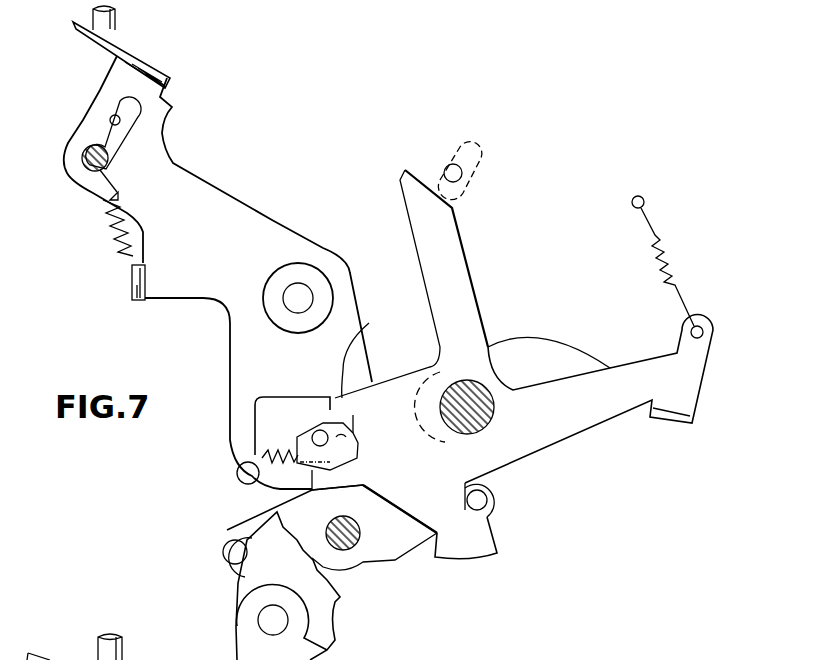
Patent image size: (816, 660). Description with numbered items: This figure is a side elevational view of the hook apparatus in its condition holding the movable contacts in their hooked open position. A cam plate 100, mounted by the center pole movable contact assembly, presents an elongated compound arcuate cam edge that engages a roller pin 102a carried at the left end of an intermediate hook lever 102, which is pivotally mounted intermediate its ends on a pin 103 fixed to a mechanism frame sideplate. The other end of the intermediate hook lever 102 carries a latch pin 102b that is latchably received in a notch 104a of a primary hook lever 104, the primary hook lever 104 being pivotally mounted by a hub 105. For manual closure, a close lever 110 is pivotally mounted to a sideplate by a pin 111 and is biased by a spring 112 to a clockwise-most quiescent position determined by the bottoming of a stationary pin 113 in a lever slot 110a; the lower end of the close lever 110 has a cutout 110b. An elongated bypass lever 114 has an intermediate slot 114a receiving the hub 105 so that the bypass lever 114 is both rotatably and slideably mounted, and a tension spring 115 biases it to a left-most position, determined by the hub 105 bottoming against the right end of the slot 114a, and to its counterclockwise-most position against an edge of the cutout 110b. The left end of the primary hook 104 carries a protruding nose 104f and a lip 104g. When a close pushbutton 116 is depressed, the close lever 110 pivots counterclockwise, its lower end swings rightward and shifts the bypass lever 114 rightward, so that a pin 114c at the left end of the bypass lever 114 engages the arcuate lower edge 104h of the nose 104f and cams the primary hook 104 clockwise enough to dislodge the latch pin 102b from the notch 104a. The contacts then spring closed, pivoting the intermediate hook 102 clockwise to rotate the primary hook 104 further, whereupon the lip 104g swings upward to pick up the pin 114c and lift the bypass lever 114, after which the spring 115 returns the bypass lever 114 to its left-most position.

The cam plate 100 is at (332, 598).
The intermediate hook lever 102 is at (412, 537).
The roller pin 102a is at (232, 553).
The latch pin 102b is at (497, 488).
The pin 103 is at (350, 537).
The primary hook lever 104 is at (597, 416).
The notch 104a is at (490, 504).
The nose 104f is at (364, 345).
The lip 104g is at (310, 476).
The arcuate lower edge 104h is at (354, 428).
The hub 105 is at (493, 420).
The close lever 110 is at (211, 256).
The lever slot 110a is at (115, 115).
The cutout 110b is at (235, 398).
The pin 111 is at (300, 290).
The spring 112 is at (110, 228).
The stationary pin 113 is at (82, 162).
The bypass lever 114 is at (574, 344).
The intermediate slot 114a is at (437, 428).
The pin 114c is at (320, 432).
The tension spring 115 is at (268, 463).
The close pushbutton 116 is at (117, 22).